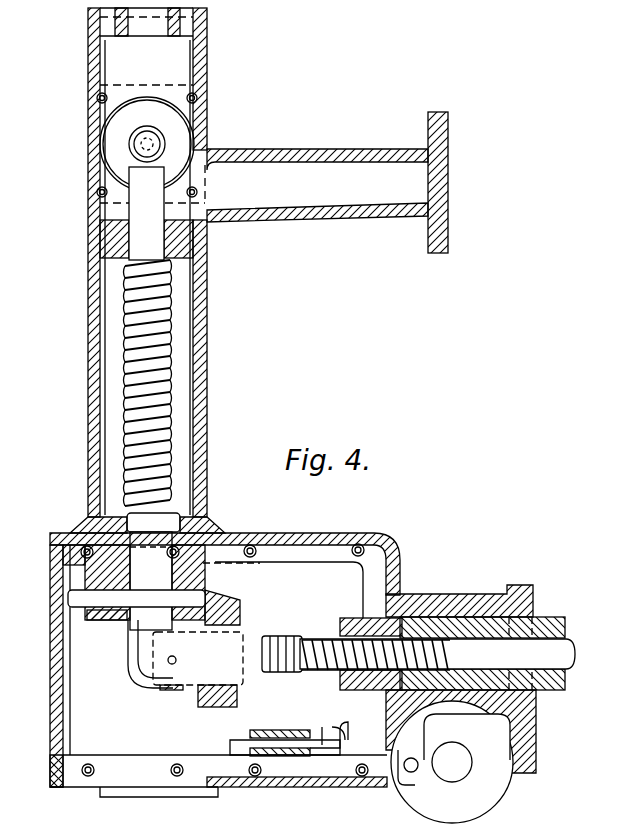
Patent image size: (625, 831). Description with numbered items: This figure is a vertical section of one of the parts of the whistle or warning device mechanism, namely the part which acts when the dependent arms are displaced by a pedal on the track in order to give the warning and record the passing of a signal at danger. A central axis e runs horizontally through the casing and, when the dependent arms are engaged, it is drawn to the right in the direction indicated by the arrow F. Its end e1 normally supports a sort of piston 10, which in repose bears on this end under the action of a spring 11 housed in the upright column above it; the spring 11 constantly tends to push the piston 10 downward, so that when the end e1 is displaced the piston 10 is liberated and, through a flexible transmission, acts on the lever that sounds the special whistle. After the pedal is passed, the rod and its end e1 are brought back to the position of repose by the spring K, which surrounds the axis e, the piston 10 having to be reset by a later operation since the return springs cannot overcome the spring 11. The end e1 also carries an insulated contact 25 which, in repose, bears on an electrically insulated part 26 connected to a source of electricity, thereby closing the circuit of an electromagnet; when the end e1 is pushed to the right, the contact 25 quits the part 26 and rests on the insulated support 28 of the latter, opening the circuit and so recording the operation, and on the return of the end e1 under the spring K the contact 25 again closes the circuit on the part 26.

The spring 11 is at (172, 318).
The piston 10 is at (153, 398).
The spring K is at (300, 628).
The direction of force arrow F is at (322, 631).
The central axis e is at (437, 654).
The end of the central axis e1 is at (185, 703).
The insulated contact 25 is at (258, 720).
The electrically insulated part 26 is at (270, 734).
The insulated support 28 is at (312, 740).